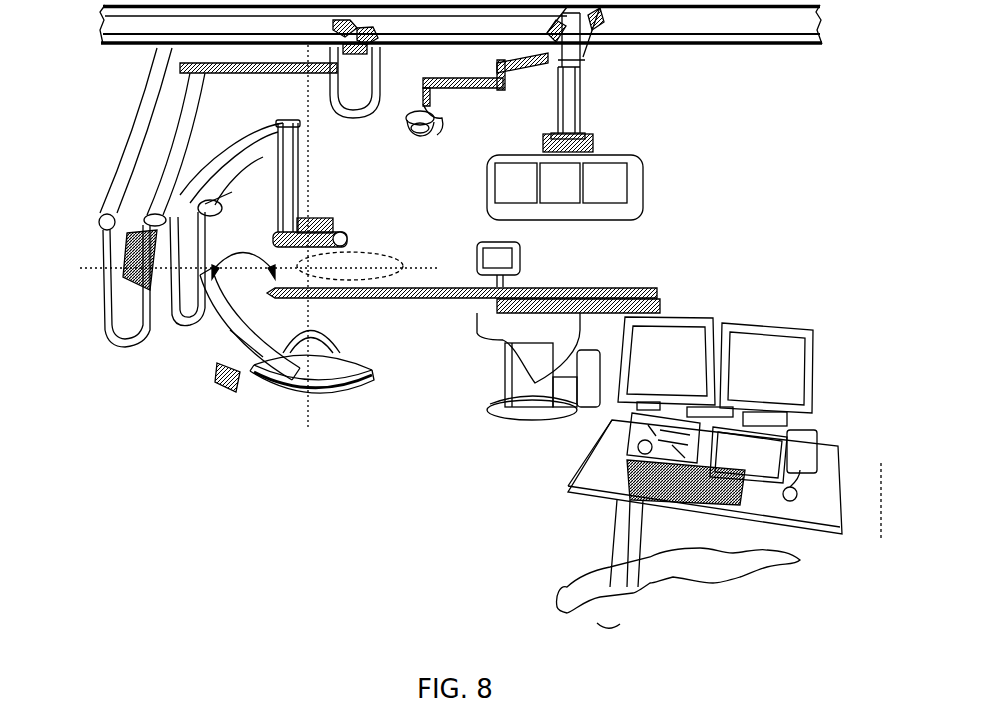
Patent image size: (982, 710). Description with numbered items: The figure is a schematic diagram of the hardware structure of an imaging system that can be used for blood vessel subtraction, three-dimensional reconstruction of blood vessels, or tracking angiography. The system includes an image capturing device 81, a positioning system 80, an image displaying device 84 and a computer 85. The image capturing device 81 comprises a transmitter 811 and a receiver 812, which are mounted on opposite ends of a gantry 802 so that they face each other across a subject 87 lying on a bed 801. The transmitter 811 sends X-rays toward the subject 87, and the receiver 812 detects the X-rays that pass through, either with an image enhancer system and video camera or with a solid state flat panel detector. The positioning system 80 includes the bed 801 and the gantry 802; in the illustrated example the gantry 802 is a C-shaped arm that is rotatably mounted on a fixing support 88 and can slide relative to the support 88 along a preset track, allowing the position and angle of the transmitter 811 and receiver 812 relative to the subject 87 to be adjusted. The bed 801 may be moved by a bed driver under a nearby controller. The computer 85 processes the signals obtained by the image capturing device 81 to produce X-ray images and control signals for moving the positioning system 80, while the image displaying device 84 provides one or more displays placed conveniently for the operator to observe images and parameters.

The fixing support 88 is at (128, 135).
The positioning system 80 is at (243, 250).
The image capturing device 81 is at (325, 418).
The gantry 802 is at (210, 348).
The receiver 812 is at (327, 222).
The transmitter 811 is at (363, 360).
The bed 801 is at (572, 292).
The subject 87 is at (396, 262).
The image displaying device 84 is at (808, 356).
The computer 85 is at (604, 456).